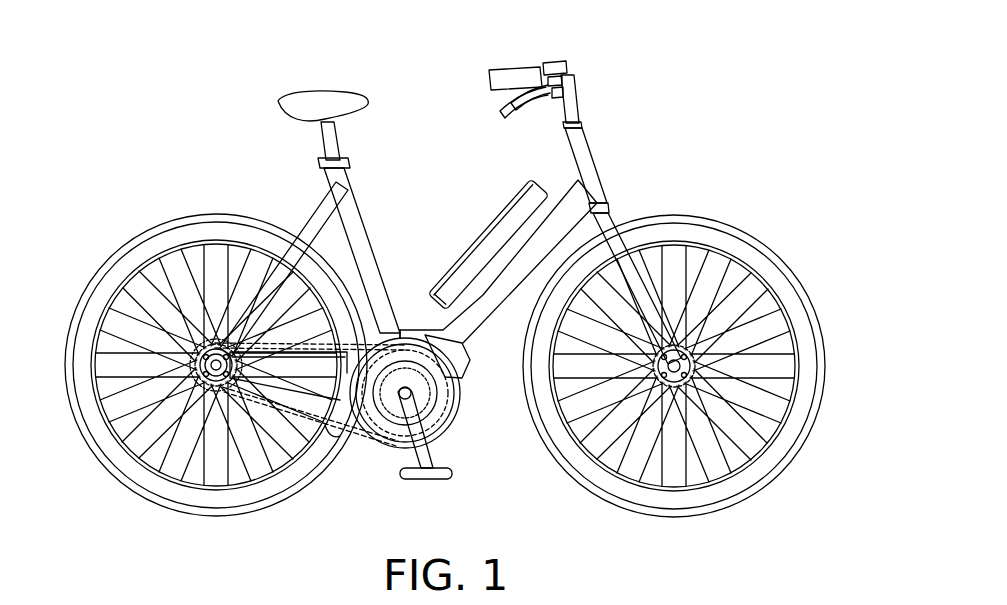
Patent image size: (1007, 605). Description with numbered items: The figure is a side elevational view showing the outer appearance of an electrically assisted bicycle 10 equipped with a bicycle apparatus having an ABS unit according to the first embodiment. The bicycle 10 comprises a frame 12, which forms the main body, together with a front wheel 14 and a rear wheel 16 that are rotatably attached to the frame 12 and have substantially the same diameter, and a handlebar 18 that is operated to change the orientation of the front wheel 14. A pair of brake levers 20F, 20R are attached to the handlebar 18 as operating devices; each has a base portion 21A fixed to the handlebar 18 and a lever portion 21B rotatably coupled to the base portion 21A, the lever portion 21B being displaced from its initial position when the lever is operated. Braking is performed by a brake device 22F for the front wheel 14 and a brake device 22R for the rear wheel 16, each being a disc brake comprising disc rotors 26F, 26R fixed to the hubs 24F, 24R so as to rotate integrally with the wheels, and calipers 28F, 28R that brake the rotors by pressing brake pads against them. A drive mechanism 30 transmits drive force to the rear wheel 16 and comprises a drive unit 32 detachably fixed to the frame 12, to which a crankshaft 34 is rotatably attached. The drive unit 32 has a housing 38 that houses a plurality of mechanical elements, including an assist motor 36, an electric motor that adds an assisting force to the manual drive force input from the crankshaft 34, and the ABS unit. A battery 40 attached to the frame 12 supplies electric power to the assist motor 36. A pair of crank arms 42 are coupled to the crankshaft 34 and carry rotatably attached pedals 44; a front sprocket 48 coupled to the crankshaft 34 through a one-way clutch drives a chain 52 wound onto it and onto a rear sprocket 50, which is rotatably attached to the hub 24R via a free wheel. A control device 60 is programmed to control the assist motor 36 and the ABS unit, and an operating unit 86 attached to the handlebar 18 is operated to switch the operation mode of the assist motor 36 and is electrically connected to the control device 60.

The bicycle 10 is at (447, 284).
The frame 12 is at (398, 210).
The front wheel 14 is at (664, 369).
The rear wheel 16 is at (213, 366).
The handlebar 18 is at (518, 66).
The brake lever 20F is at (498, 104).
The brake lever 20R is at (527, 119).
The base portion 21A is at (575, 80).
The lever portion 21B is at (576, 100).
The brake device 22F is at (655, 390).
The brake device 22R is at (186, 400).
The hub 24F is at (782, 300).
The hub 24R is at (257, 470).
The disc rotor 26F is at (695, 470).
The disc rotor 26R is at (150, 412).
The caliper 28F is at (590, 410).
The caliper 28R is at (217, 290).
The drive mechanism 30 is at (438, 394).
The drive unit 32 is at (418, 329).
The crankshaft 34 is at (455, 410).
The assist motor 36 is at (445, 393).
The housing 38 is at (470, 353).
The battery 40 is at (506, 206).
The crank arm 42 is at (432, 447).
The pedal 44 is at (428, 480).
The front sprocket 48 is at (375, 440).
The rear sprocket 50 is at (188, 400).
The chain 52 is at (333, 434).
The control device 60 is at (405, 345).
The operating unit 86 is at (556, 61).